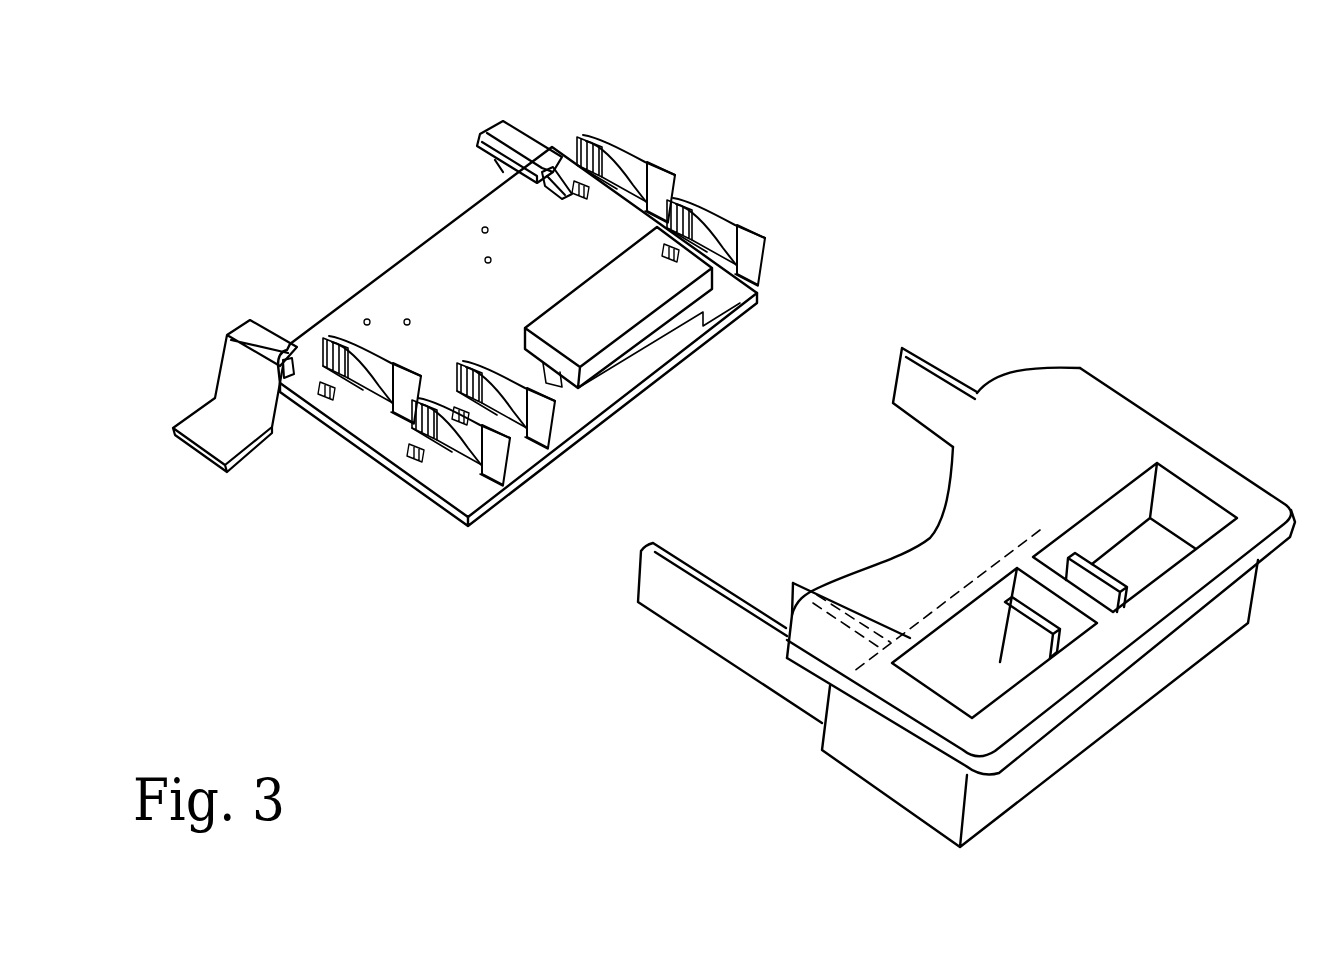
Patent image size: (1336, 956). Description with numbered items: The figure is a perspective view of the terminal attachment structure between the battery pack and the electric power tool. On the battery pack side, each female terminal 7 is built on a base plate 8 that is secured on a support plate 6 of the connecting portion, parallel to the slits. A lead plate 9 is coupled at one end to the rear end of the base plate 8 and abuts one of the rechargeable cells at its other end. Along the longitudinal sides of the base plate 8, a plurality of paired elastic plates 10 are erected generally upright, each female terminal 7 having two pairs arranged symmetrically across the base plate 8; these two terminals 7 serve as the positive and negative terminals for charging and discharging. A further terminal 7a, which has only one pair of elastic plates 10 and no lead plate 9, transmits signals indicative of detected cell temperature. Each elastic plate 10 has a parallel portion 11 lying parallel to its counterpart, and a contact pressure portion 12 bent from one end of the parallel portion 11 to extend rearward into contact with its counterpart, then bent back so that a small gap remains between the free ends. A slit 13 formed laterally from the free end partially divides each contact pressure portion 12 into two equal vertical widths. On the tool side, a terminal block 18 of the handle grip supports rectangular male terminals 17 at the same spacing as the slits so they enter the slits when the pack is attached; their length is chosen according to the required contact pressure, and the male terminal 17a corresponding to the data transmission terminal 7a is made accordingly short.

The support plate 6 is at (430, 240).
The female terminal 7 is at (594, 126).
The terminal 7a is at (442, 361).
The base plate 8 is at (560, 165).
The lead plate 9 is at (487, 128).
The elastic plate 10 is at (648, 157).
The parallel portion 11 is at (657, 183).
The contact pressure portion 12 is at (627, 165).
The slit 13 is at (500, 187).
The male terminal 17 is at (920, 373).
The male terminal 17a is at (793, 580).
The terminal block 18 is at (1127, 428).